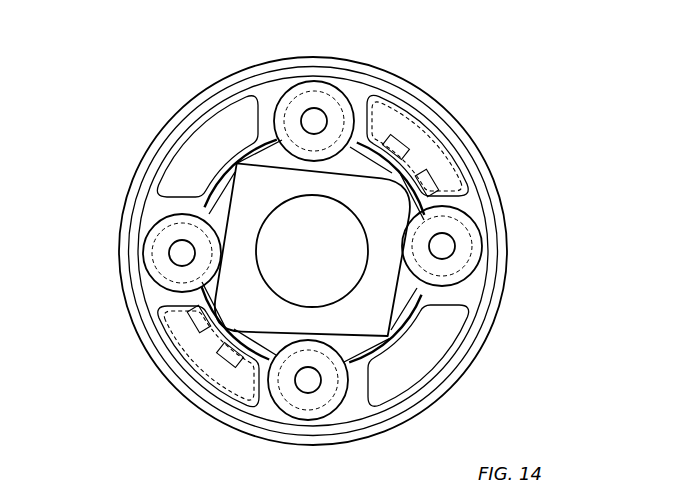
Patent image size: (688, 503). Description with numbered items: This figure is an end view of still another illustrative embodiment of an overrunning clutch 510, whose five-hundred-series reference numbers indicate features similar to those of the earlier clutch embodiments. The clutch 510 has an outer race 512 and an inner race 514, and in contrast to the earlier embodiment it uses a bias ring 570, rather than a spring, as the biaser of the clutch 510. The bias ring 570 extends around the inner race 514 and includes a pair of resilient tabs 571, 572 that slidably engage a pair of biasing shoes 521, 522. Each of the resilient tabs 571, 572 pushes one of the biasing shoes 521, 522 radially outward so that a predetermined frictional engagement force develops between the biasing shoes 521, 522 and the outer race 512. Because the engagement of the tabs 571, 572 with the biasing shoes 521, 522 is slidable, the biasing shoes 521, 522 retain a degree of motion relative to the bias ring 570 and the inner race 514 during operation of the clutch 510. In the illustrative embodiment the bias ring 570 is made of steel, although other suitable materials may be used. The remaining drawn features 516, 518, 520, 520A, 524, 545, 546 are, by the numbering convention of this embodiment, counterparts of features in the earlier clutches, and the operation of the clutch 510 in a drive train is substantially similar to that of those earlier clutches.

The overrunning clutch 510 is at (138, 74).
The outer race 512 is at (465, 113).
The inner race 514 is at (350, 160).
The inner ring 516 is at (258, 83).
The cage ring 518 is at (268, 100).
The roller 520 is at (333, 132).
The roller internal feature 520A is at (316, 80).
The biasing shoe 521 is at (143, 298).
The biasing shoe 522 is at (465, 203).
The central square hub 524 is at (200, 203).
The ring track 545 is at (418, 100).
The pocket window 546 is at (195, 145).
The bias ring 570 is at (165, 200).
The resilient tab 571 is at (183, 322).
The resilient tab 572 is at (415, 142).